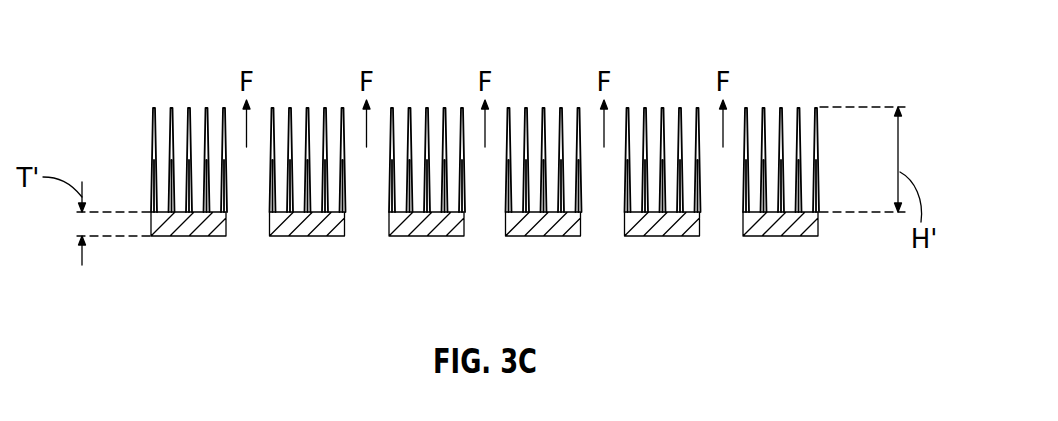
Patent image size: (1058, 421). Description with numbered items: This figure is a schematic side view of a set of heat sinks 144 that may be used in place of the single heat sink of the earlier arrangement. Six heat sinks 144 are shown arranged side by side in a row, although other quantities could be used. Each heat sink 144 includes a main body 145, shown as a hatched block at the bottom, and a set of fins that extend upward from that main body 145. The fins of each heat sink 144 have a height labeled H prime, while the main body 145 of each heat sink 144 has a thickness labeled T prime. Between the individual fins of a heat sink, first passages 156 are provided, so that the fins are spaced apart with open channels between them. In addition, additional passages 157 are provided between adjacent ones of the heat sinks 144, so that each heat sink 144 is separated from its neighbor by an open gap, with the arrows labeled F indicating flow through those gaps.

The heat sink 144 is at (495, 154).
The main body 145 is at (197, 228).
The first passage 156 is at (808, 109).
The additional passage 157 is at (190, 106).